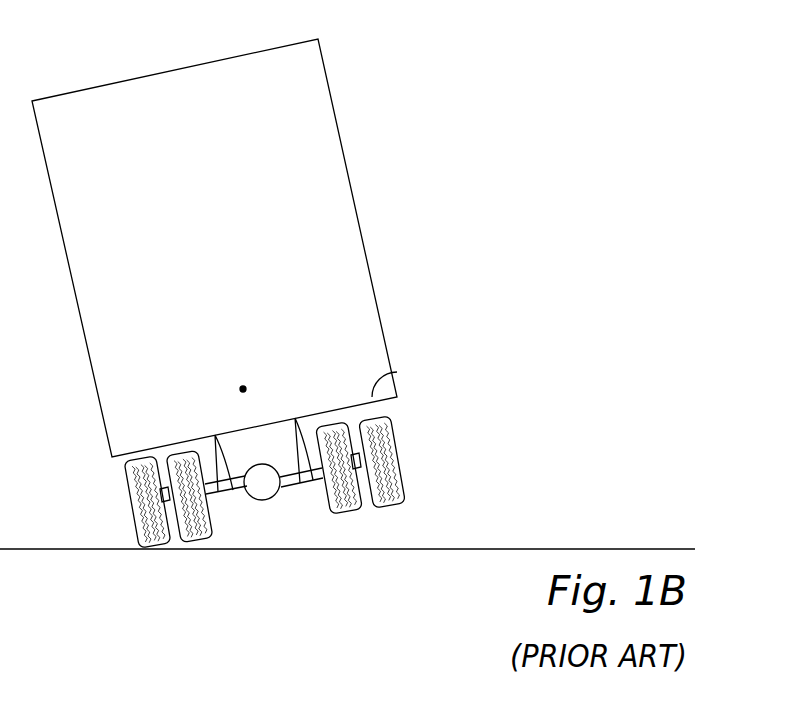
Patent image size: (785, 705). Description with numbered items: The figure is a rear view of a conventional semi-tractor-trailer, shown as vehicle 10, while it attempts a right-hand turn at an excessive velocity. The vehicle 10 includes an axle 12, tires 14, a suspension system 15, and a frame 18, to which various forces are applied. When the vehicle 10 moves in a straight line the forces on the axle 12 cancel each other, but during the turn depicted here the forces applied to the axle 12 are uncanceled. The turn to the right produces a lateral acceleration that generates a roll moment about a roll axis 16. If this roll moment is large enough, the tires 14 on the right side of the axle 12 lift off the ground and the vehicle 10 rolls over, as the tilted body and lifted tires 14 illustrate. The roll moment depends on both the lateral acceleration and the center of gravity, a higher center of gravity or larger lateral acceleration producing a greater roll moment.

The vehicle 10 is at (345, 163).
The axle 12 is at (270, 500).
The tires 14 is at (203, 543).
The suspension system 15 is at (240, 488).
The roll axis 16 is at (243, 389).
The frame 18 is at (397, 372).